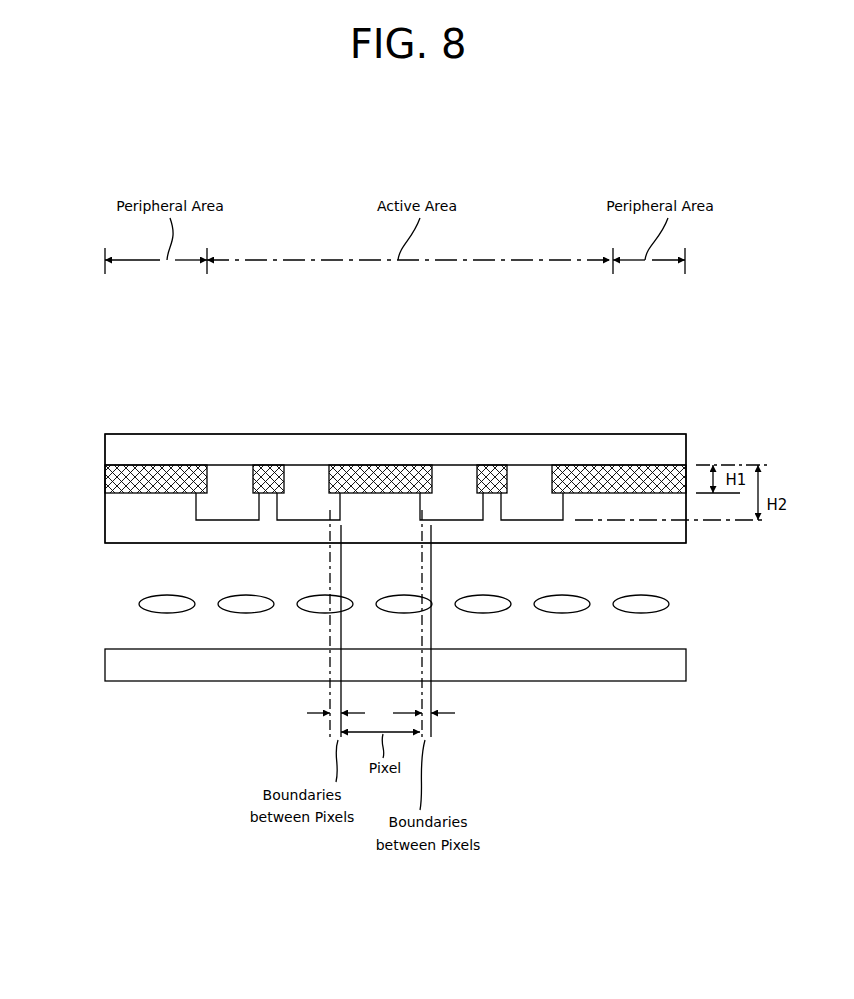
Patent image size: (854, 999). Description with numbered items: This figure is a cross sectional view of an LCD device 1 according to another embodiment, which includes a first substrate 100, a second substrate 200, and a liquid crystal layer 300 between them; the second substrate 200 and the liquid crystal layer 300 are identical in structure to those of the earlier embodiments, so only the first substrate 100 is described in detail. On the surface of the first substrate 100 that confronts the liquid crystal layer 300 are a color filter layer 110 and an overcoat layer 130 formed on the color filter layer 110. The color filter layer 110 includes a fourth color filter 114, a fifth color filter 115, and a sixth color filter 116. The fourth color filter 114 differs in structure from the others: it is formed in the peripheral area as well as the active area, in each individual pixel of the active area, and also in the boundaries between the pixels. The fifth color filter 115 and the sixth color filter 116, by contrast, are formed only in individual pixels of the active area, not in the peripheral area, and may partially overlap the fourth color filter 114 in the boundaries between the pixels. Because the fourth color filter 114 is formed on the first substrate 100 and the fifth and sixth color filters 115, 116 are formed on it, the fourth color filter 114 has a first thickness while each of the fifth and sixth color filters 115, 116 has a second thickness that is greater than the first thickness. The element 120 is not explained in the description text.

The display device 1 is at (90, 404).
The first substrate 100 is at (105, 448).
The color filter layer 110 is at (517, 326).
The fourth color filter 114 is at (168, 465).
The fifth color filter 115 is at (447, 477).
The sixth color filter 116 is at (543, 475).
The sub-pixel emission region 120 is at (284, 500).
The overcoat layer 130 is at (105, 533).
The second substrate 200 is at (686, 665).
The liquid crystal layer 300 is at (668, 604).